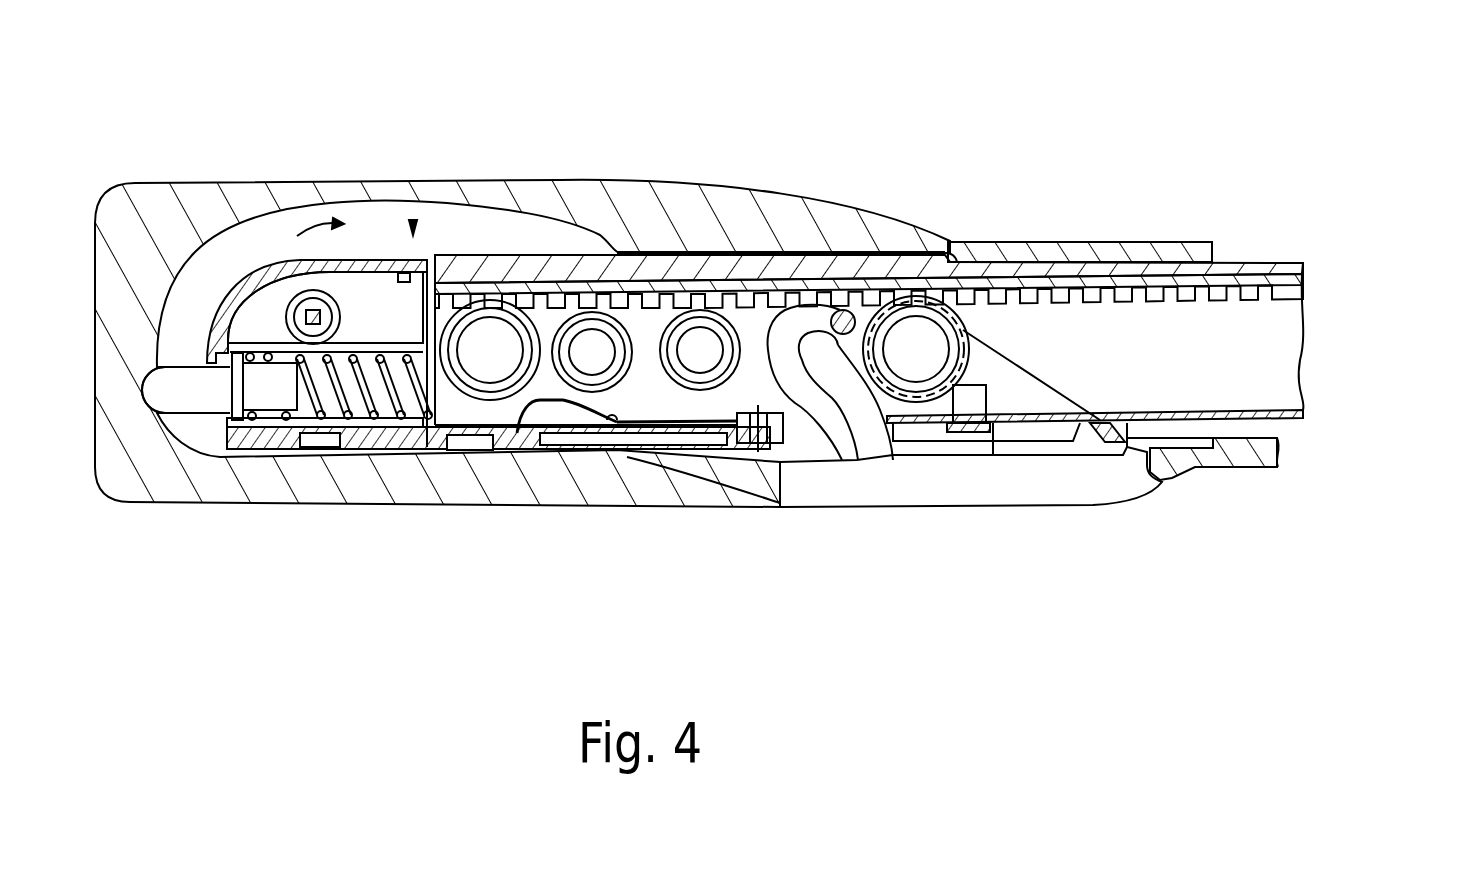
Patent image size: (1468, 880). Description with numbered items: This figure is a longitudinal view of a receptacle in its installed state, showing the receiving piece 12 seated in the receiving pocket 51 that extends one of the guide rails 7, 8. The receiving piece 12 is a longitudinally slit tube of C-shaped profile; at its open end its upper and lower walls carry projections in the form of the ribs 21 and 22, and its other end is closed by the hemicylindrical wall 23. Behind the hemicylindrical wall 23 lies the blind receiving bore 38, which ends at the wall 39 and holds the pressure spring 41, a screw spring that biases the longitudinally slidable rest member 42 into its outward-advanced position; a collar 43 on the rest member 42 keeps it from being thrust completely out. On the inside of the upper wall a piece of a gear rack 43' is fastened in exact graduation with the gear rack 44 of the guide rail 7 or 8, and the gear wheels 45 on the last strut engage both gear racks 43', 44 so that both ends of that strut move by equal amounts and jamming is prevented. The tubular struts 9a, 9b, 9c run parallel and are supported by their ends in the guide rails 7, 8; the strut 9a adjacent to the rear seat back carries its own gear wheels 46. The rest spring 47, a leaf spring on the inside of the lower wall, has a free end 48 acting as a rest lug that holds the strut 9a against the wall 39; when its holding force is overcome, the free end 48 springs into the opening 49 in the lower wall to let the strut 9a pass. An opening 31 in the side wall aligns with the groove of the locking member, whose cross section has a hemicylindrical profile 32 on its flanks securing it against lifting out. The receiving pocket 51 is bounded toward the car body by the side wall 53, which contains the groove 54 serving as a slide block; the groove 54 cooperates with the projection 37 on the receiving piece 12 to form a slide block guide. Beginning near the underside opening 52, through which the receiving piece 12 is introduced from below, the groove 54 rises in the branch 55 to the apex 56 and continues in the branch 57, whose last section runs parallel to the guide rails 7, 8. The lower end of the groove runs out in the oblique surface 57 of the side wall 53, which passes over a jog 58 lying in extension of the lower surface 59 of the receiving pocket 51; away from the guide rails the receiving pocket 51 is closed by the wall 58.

The receiving piece 12 is at (413, 222).
The projection 37 is at (860, 290).
The receiving pocket 51 is at (300, 225).
The side wall 53 is at (370, 233).
The gear rack 43' is at (787, 164).
The gear rack 44 is at (1307, 272).
The rib 22 is at (1127, 420).
The guide rail 7 is at (1362, 380).
The guide rail 8 is at (1307, 418).
The branch of the groove 57 is at (824, 318).
The groove 54 is at (887, 456).
The hemicylindrical profile 32 is at (993, 455).
The opening 52 is at (1093, 475).
The opening 31 is at (975, 403).
The gear wheels 45 is at (963, 330).
The rib 21 is at (905, 318).
The tubular strut 9a is at (480, 337).
The tubular strut 9b is at (583, 343).
The tubular strut 9c is at (687, 333).
The gear wheels 46 is at (463, 297).
The rest spring 47 is at (617, 417).
The free end of the rest spring 48 is at (547, 403).
The wall 39 is at (437, 423).
The opening 49 is at (500, 427).
The apex 56 is at (758, 313).
The rising branch 55 is at (838, 405).
The wall 58 is at (177, 305).
The hemicylindrical wall 23 is at (227, 280).
The rest member 42 is at (180, 403).
The collar 43 is at (216, 478).
The blind receiving bore 38 is at (330, 410).
The pressure spring 41 is at (367, 403).
The lower surface 59 is at (267, 430).